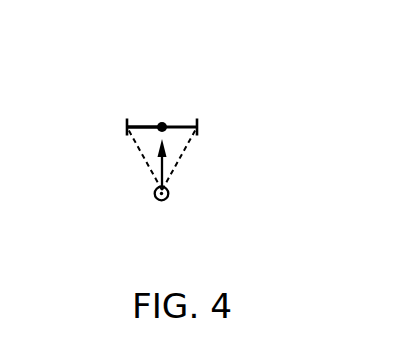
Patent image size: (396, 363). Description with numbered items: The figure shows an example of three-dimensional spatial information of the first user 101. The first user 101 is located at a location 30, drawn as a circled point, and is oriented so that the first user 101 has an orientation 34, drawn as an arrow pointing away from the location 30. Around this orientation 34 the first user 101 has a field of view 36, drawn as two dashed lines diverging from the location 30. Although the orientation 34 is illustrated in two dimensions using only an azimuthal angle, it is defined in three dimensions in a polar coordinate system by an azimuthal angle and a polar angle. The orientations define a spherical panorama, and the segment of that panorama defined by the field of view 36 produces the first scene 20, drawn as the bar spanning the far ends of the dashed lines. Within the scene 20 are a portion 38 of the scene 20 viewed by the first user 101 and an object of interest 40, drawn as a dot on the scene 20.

The first scene 20 is at (203, 108).
The location 30 is at (168, 198).
The orientation 34 is at (164, 160).
The field of view 36 is at (178, 165).
The portion of the scene 38 is at (141, 122).
The object of interest 40 is at (161, 123).
The first user 101 is at (145, 222).